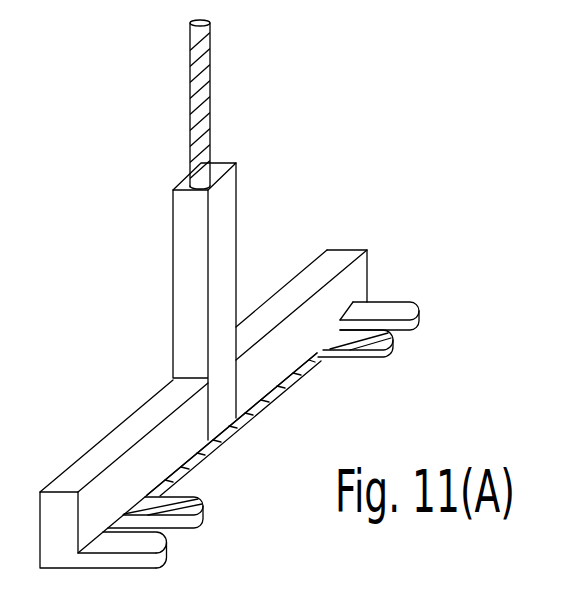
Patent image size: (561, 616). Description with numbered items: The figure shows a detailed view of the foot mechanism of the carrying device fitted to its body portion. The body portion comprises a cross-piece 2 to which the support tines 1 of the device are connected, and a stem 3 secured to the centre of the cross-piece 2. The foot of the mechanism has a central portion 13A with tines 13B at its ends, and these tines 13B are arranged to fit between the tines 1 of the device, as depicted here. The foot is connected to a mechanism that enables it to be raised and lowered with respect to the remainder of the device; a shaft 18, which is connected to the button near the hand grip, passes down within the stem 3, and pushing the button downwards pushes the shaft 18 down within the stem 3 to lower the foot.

The tines 1 is at (152, 557).
The cross-piece 2 is at (122, 439).
The stem 3 is at (222, 250).
The central portion 13A is at (255, 420).
The tines 13B is at (202, 512).
The shaft 18 is at (212, 88).